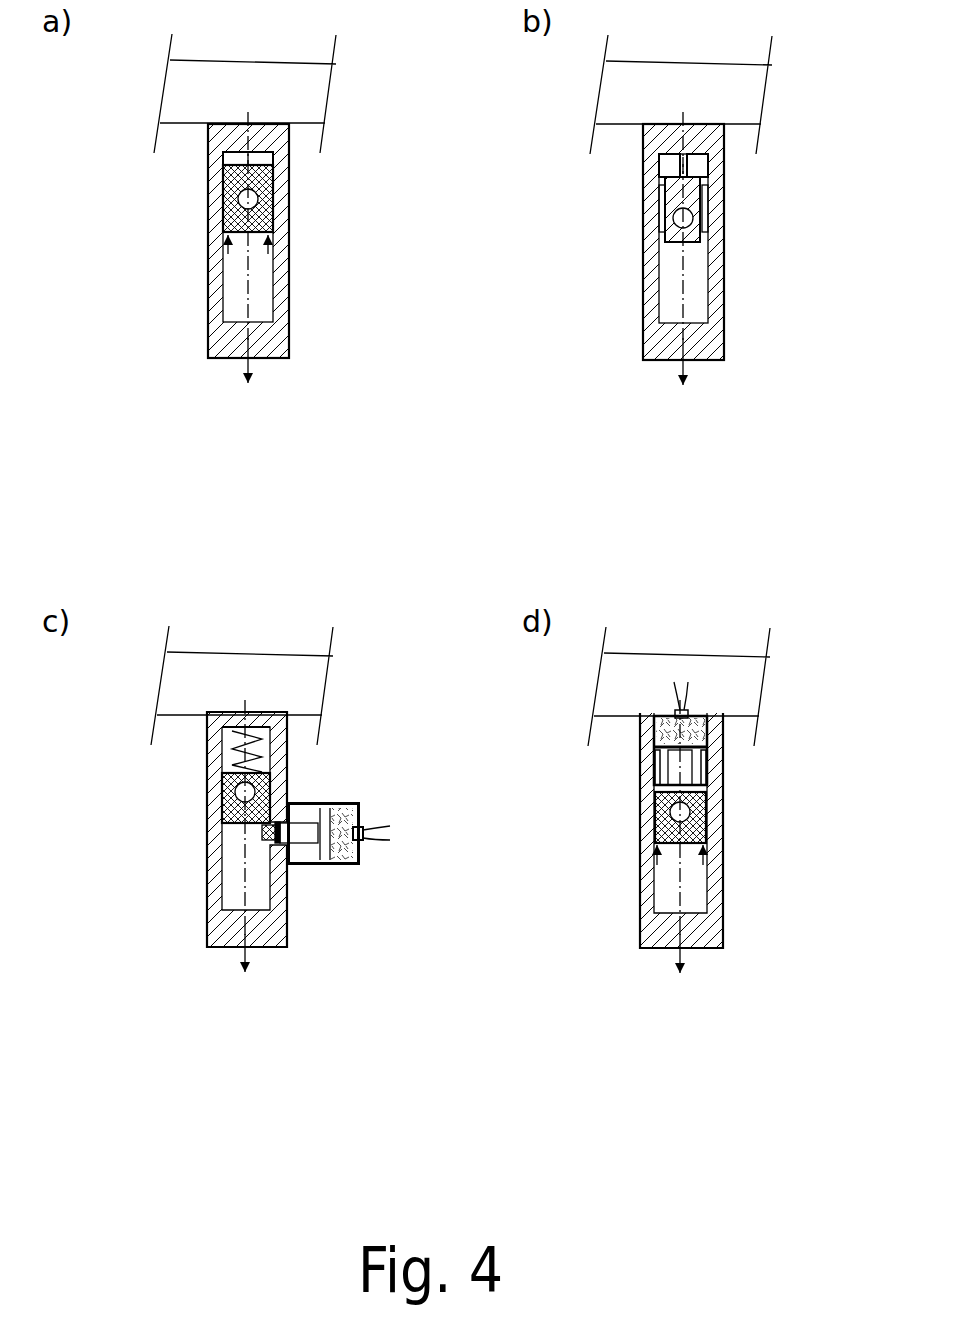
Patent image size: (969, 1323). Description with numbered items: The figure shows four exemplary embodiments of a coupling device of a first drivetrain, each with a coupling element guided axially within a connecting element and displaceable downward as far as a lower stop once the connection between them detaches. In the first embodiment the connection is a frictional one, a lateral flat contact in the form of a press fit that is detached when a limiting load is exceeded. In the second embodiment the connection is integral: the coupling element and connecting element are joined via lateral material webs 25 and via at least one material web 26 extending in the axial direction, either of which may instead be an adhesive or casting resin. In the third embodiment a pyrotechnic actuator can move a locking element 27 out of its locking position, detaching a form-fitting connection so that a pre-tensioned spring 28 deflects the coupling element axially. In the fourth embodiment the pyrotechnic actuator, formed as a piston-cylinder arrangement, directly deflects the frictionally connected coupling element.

The lateral material webs 25 is at (712, 254).
The material web 26 is at (706, 165).
The locking element 27 is at (257, 832).
The pre-tensioned spring 28 is at (260, 757).